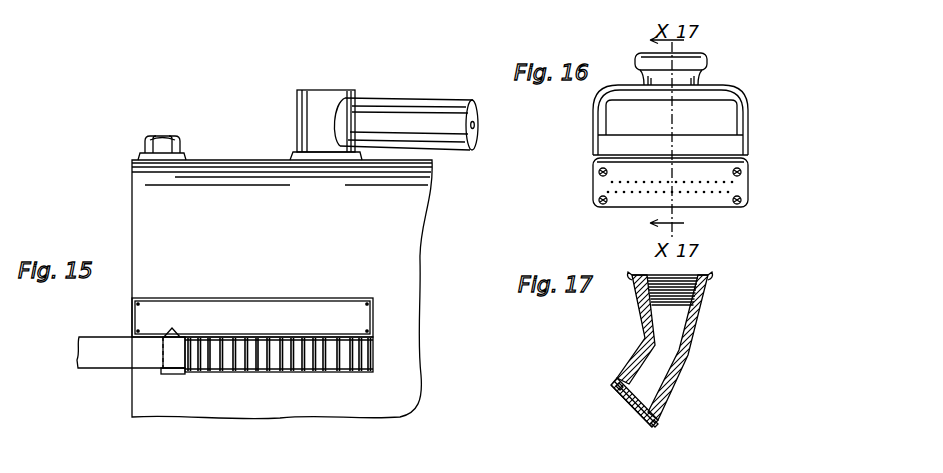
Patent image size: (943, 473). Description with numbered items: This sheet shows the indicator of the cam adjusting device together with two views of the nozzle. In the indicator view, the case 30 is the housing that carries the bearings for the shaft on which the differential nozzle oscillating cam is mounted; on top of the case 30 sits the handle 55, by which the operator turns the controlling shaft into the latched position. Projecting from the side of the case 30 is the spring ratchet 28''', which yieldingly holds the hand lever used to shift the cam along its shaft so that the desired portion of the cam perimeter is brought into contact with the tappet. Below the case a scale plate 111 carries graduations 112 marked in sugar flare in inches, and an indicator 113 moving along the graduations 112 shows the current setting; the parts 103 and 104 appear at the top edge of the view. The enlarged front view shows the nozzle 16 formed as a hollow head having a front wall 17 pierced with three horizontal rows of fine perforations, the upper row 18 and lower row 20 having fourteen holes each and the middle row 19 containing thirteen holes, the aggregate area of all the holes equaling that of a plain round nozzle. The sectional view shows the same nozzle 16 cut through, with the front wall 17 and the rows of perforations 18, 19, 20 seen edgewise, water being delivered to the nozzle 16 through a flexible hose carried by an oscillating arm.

In FIG. 15, the case 30 is at (282, 277).
In FIG. 15, the handle 55 is at (297, 120).
In FIG. 15, the spring ratchet 28''' is at (121, 375).
In FIG. 15, the scale plate 111 is at (410, 362).
In FIG. 15, the graduations 112 is at (258, 377).
In FIG. 15, the indicator 113 is at (172, 375).
In FIG. 15, the part 103 is at (265, 6).
In FIG. 15, the part 104 is at (342, 5).
In FIG. 16, the nozzle 16 is at (749, 120).
In FIG. 17, the nozzle 16 is at (700, 328).
In FIG. 16, the front wall 17 is at (733, 162).
In FIG. 17, the front wall 17 is at (620, 378).
In FIG. 16, the upper row of perforations 18 is at (733, 183).
In FIG. 17, the upper row of perforations 18 is at (634, 398).
In FIG. 16, the middle row of perforations 19 is at (733, 191).
In FIG. 17, the middle row of perforations 19 is at (635, 407).
In FIG. 16, the lower row of perforations 20 is at (734, 196).
In FIG. 17, the lower row of perforations 20 is at (645, 413).